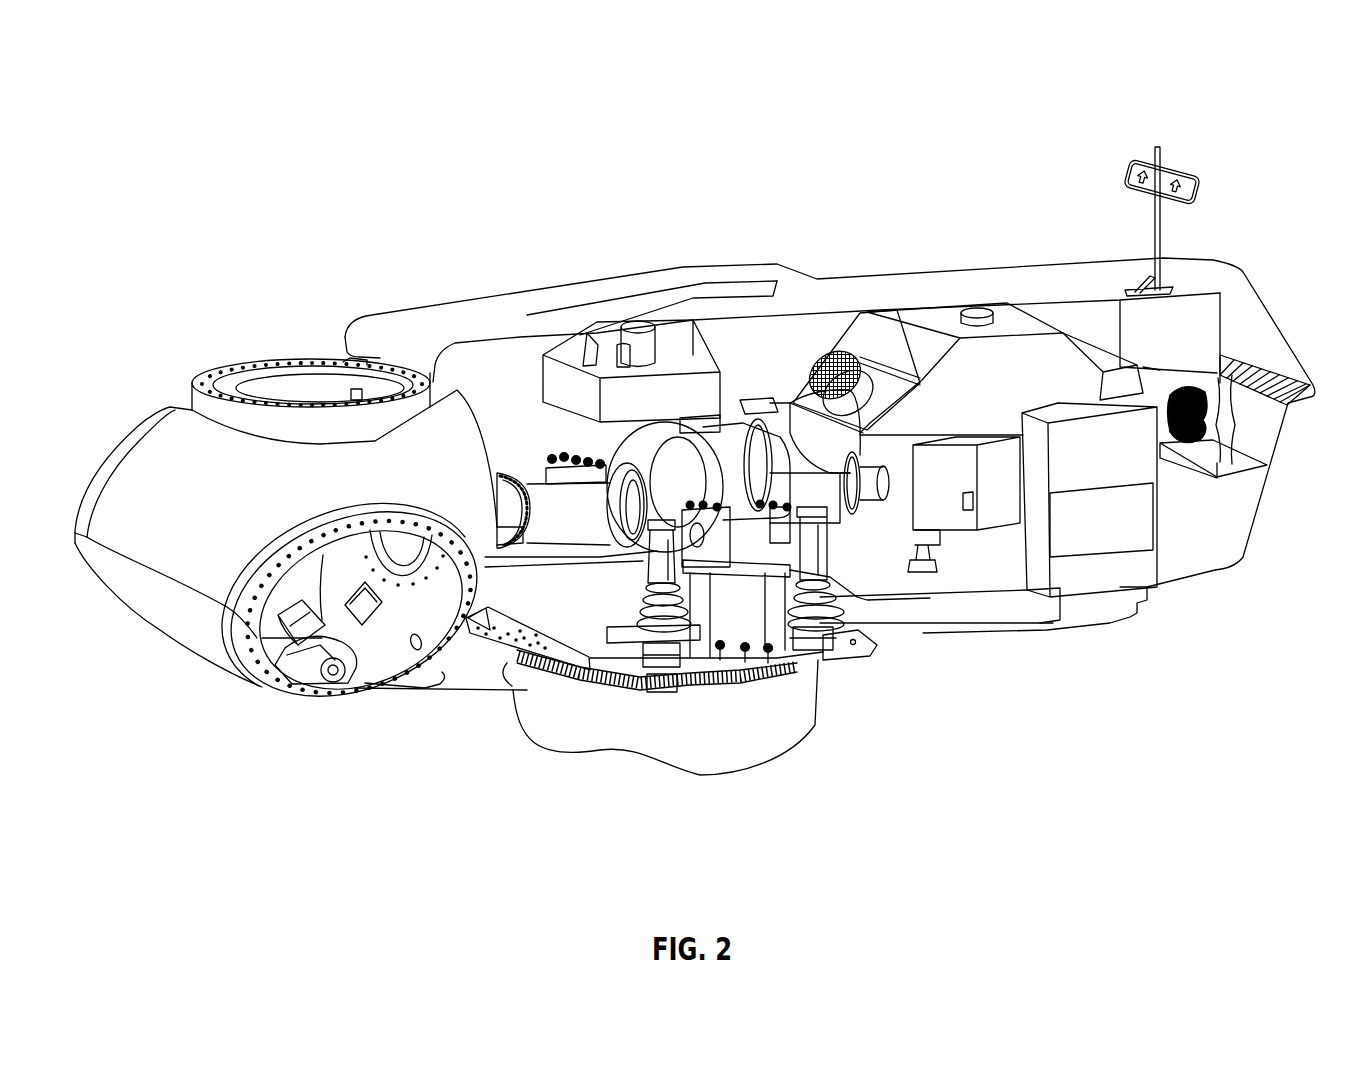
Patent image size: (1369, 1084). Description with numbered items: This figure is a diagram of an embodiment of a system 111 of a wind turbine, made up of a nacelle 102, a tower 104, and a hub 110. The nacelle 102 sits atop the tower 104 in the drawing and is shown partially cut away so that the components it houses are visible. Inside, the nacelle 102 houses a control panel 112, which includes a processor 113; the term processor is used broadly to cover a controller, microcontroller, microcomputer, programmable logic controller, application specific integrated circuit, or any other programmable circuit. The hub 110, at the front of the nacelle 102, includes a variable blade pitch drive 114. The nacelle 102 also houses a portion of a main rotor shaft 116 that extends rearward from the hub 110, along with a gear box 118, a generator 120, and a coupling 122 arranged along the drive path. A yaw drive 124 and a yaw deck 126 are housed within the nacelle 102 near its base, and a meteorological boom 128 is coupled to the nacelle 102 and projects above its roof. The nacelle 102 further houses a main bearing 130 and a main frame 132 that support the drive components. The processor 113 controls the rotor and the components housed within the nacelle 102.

The nacelle 102 is at (400, 330).
The tower 104 is at (627, 735).
The hub 110 is at (278, 430).
The system 111 is at (605, 122).
The control panel 112 is at (1075, 443).
The processor 113 is at (1116, 558).
The variable blade pitch drive 114 is at (283, 637).
The main rotor shaft 116 is at (557, 515).
The gear box 118 is at (743, 437).
The generator 120 is at (945, 503).
The coupling 122 is at (860, 455).
The yaw drive 124 is at (667, 643).
The yaw deck 126 is at (876, 660).
The meteorological boom 128 is at (1173, 183).
The main bearing 130 is at (505, 513).
The main frame 132 is at (1057, 625).